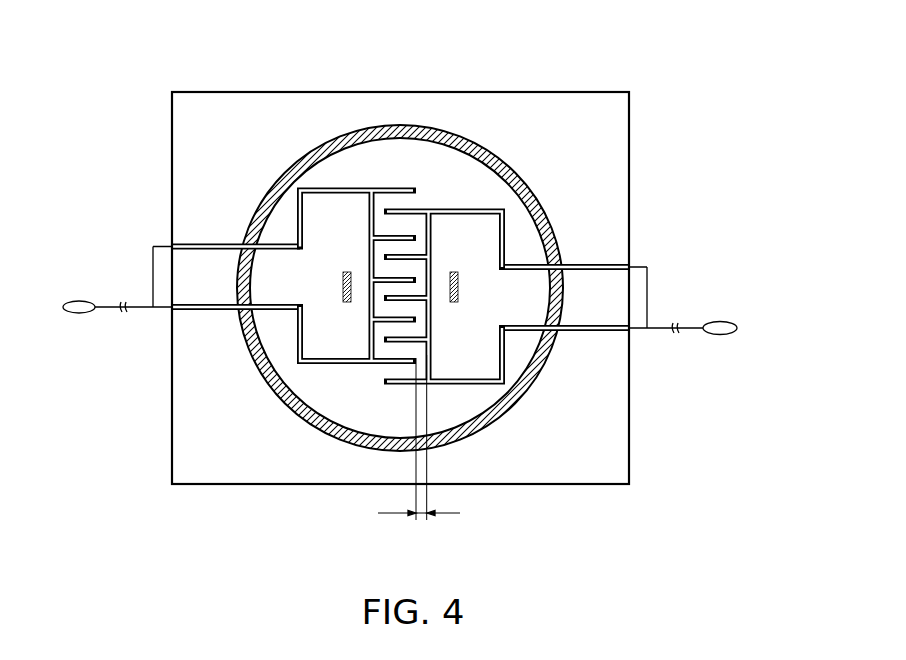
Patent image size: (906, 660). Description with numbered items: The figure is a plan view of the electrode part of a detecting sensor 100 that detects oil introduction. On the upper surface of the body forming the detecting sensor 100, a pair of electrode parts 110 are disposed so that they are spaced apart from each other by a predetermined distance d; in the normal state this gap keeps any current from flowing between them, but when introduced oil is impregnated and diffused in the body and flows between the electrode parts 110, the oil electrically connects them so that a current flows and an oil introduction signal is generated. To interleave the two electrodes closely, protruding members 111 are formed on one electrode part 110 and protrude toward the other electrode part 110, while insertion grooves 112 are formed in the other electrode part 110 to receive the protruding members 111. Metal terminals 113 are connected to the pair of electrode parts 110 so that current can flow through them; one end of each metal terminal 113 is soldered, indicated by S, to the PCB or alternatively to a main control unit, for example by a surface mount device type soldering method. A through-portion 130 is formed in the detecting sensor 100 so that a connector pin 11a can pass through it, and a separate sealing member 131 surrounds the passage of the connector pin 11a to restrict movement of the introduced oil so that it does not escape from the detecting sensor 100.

The detecting sensor 100 is at (645, 132).
The electrode part 110 is at (203, 246).
The protruding member 111 is at (403, 238).
The insertion groove 112 is at (424, 238).
The metal terminal 113 is at (137, 309).
The connector pin 11a is at (340, 288).
The through-portion 130 is at (460, 289).
The sealing member 131 is at (495, 412).
The soldering S is at (74, 311).
The predetermined distance d is at (419, 437).